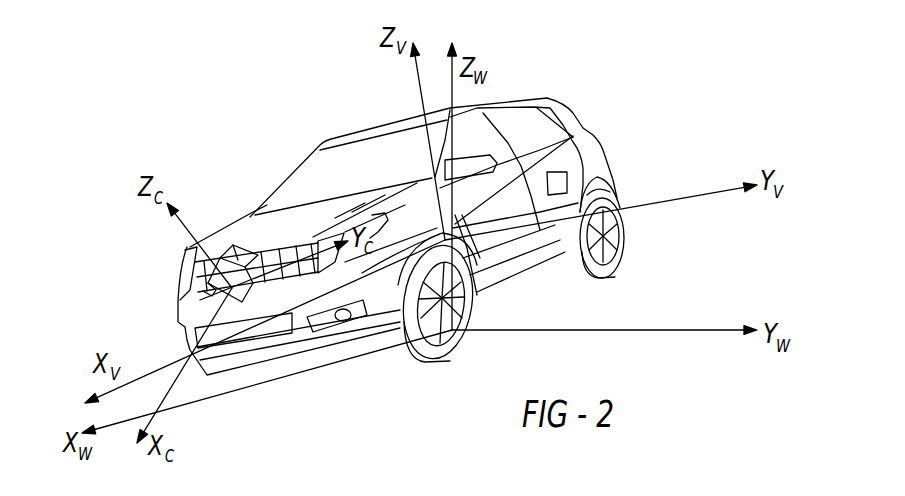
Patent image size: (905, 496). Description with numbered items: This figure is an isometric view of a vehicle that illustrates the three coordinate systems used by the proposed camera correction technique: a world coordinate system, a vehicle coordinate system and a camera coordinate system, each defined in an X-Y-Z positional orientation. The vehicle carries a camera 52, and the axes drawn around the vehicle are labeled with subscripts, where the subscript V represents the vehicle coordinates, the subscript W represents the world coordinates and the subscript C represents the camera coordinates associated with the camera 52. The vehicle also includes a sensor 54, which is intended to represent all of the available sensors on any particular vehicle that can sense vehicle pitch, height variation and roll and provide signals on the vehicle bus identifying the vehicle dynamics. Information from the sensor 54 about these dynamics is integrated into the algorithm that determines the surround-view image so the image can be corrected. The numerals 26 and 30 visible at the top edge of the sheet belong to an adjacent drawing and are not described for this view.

The controller 26 is at (365, 0).
The vehicle 30 is at (624, 34).
The camera 52 is at (237, 257).
The sensor 54 is at (573, 150).